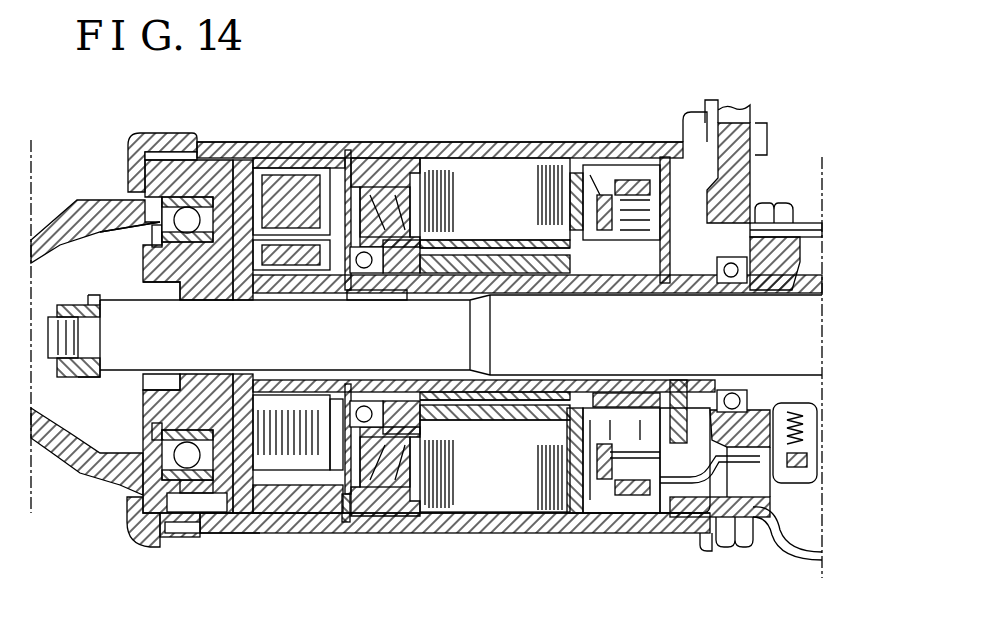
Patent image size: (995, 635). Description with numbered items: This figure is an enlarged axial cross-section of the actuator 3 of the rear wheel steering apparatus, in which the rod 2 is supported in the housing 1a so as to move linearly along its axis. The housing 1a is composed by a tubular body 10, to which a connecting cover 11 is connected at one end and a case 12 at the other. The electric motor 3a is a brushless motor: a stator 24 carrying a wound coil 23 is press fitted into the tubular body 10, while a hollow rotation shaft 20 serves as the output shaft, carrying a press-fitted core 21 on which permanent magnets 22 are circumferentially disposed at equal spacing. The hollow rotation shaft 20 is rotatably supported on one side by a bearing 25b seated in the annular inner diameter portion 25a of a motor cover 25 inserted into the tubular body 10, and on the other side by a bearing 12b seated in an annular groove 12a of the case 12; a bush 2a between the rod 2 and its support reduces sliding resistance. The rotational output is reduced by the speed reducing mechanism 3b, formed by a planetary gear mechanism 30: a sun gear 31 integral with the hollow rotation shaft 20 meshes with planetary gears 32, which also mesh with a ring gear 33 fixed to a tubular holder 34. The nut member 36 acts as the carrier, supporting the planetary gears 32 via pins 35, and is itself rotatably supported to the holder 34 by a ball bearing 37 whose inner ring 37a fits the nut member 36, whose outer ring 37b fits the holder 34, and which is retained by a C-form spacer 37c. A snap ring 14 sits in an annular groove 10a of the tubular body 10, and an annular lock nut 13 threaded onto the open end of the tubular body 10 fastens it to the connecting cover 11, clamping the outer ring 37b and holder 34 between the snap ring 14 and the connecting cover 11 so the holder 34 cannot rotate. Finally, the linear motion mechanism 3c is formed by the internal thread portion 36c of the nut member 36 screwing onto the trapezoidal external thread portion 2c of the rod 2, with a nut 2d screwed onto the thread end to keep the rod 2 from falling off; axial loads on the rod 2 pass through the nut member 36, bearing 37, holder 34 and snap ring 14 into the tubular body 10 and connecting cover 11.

The rod 2 is at (542, 355).
The bush 2a is at (805, 282).
The external thread portion 2c is at (110, 388).
The nut 2d is at (72, 376).
The actuator 3 is at (638, 142).
The electric motor 3a is at (467, 507).
The speed reducing mechanism 3b is at (245, 524).
The linear motion mechanism 3c is at (128, 383).
The tubular body 10 is at (483, 150).
The annular groove 10a is at (347, 522).
The connecting cover 11 is at (138, 220).
The case 12 is at (740, 203).
The annular groove 12a is at (727, 520).
The bearing 12b is at (767, 523).
The lock nut 13 is at (157, 133).
The snap ring 14 is at (347, 150).
The housing 1a is at (499, 140).
The hollow rotation shaft 20 is at (447, 272).
The core 21 is at (500, 265).
The permanent magnets 22 is at (497, 415).
The coil 23 is at (594, 190).
The stator 24 is at (553, 172).
The motor cover 25 is at (390, 158).
The inner diameter portion 25a is at (383, 500).
The bearing 25b is at (332, 427).
The planetary gear mechanism 30 is at (285, 447).
The sun gear 31 is at (357, 242).
The planetary gears 32 is at (290, 173).
The ring gear 33 is at (287, 212).
The holder 34 is at (243, 218).
The pins 35 is at (218, 230).
The nut member 36 is at (150, 243).
The internal thread portion 36c is at (165, 300).
The bearing 37 is at (155, 172).
The inner ring 37a is at (163, 541).
The outer ring 37b is at (193, 500).
The spacer 37c is at (132, 534).